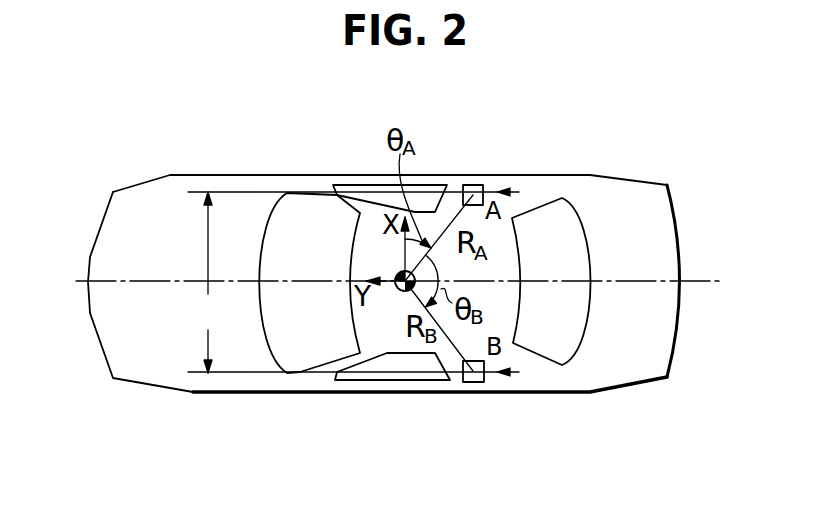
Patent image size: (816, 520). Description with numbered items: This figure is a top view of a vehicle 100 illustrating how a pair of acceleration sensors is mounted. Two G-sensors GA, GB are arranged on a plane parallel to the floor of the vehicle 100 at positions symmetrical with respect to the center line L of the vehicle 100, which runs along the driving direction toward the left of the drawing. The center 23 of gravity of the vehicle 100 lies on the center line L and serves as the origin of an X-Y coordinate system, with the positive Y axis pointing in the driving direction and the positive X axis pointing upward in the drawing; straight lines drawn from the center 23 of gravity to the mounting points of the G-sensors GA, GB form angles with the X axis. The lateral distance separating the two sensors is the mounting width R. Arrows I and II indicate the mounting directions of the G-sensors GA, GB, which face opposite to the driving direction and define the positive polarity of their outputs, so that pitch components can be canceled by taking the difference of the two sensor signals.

The vehicle 100 is at (210, 175).
The center of gravity 23 is at (398, 290).
The G-sensor GA is at (473, 185).
The G-sensor GB is at (468, 382).
The center line L is at (696, 276).
The width for mounting two G-sensors R is at (353, 282).
The arrow indicating mounting direction I is at (507, 181).
The arrow indicating mounting direction II is at (504, 376).